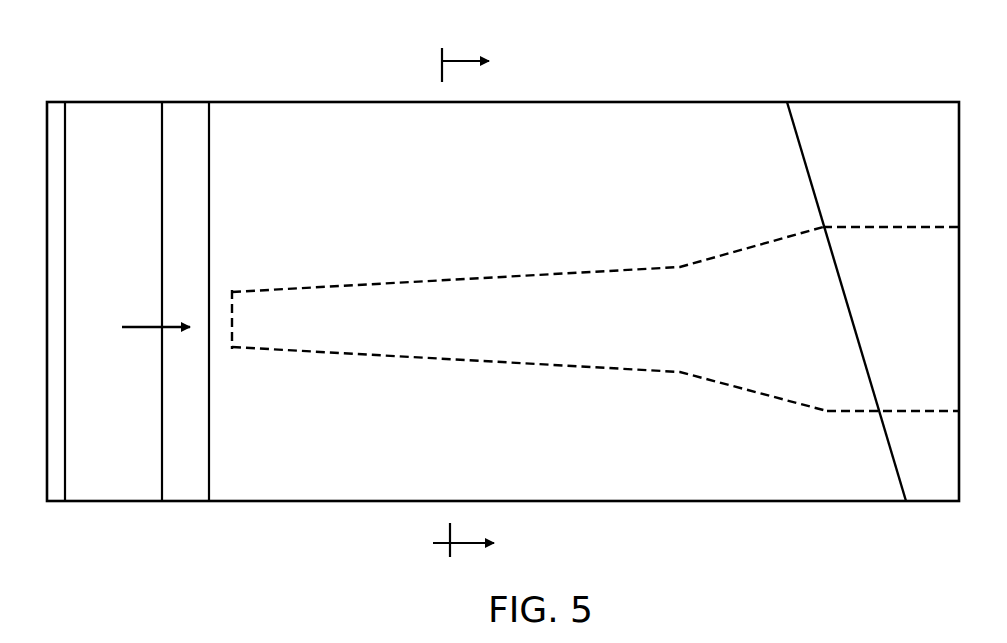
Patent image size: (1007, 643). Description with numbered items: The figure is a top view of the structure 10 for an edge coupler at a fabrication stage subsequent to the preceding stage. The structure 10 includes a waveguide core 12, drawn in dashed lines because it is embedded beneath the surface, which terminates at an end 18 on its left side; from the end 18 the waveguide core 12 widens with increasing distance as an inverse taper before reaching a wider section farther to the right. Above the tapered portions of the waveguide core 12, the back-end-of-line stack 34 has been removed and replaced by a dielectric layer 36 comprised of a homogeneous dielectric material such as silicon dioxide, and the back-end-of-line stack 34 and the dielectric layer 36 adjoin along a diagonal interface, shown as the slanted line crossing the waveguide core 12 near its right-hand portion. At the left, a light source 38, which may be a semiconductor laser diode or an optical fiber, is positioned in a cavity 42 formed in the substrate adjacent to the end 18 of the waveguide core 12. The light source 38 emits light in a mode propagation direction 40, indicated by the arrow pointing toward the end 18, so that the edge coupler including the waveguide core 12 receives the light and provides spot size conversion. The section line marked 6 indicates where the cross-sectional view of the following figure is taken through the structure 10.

The structure 10 is at (121, 37).
The waveguide core 12 is at (407, 338).
The end 18 is at (230, 302).
The back-end-of-line stack 34 is at (867, 147).
The dielectric layer 36 is at (647, 145).
The light source 38 is at (130, 133).
The mode propagation direction 40 is at (150, 327).
The cavity 42 is at (188, 301).
The section line 6- 6 is at (479, 304).